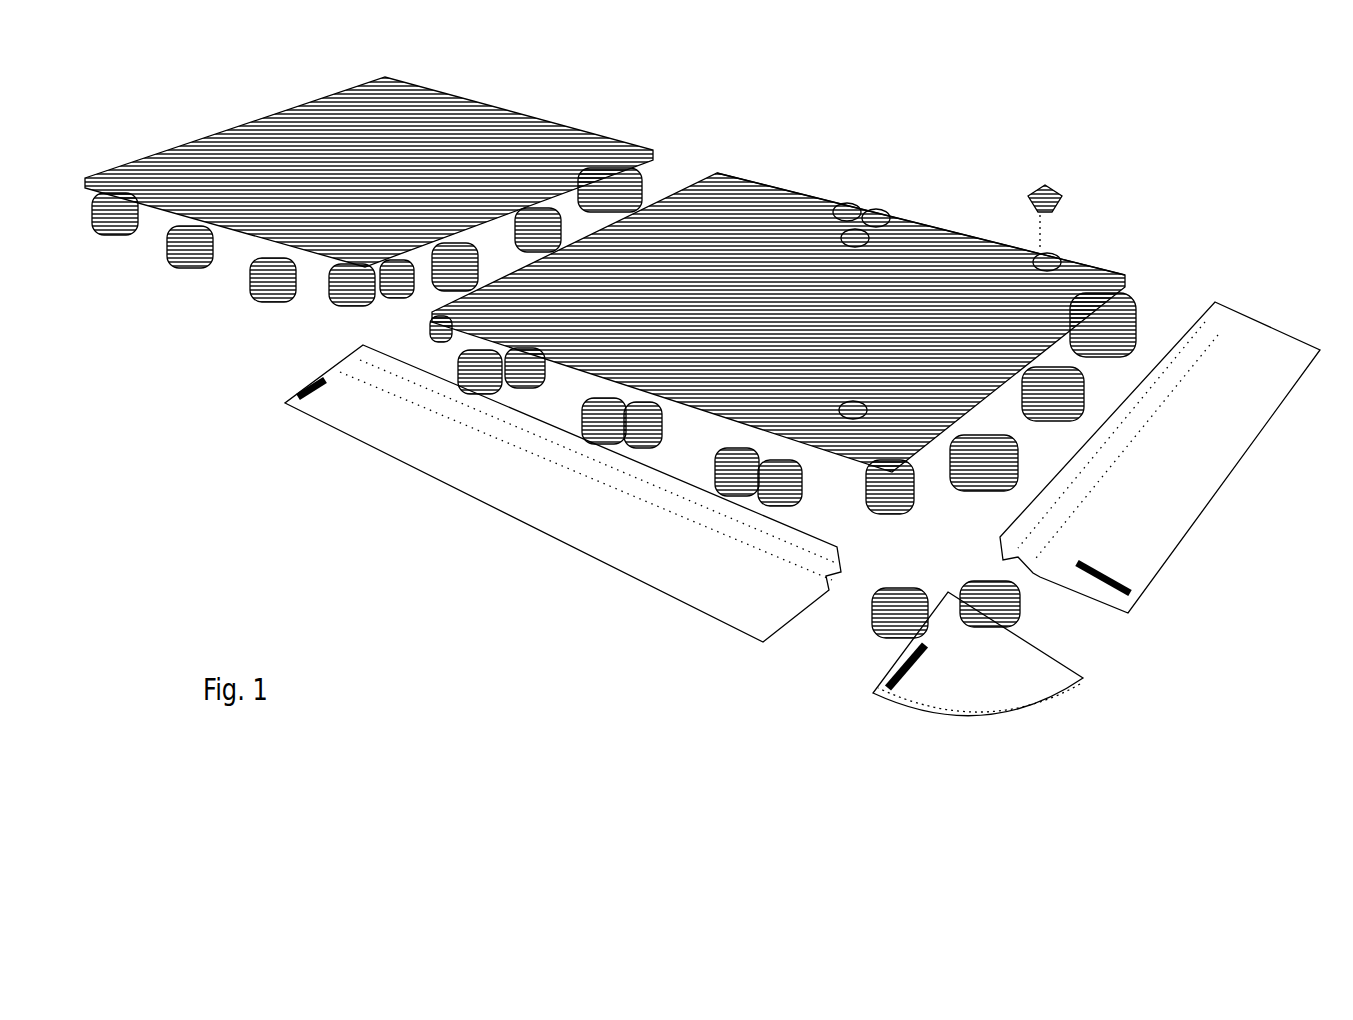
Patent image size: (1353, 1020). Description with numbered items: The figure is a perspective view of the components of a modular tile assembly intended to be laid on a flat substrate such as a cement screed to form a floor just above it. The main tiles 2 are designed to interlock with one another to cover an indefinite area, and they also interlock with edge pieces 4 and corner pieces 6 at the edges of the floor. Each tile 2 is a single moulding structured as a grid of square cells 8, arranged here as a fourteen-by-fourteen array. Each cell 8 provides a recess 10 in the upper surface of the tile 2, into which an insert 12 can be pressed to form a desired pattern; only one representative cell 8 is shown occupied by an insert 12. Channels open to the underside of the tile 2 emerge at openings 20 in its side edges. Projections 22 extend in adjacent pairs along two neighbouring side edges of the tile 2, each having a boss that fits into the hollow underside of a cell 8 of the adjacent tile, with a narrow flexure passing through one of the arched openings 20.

The tile 2 is at (618, 117).
The edge piece 4 is at (1227, 320).
The corner piece 6 is at (932, 685).
The cell 8 is at (853, 237).
The recess 10 is at (1047, 258).
The insert 12 is at (1053, 195).
The opening 20 is at (873, 500).
The projection 22 is at (640, 188).